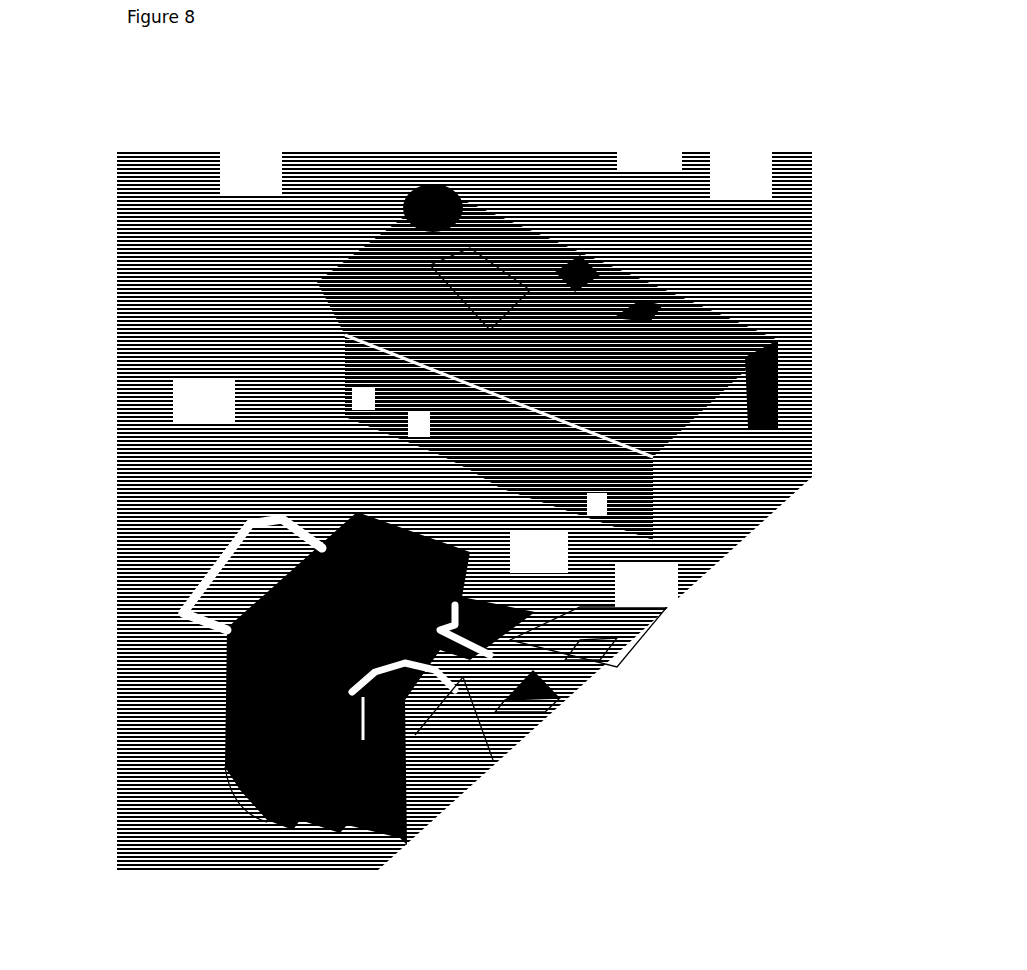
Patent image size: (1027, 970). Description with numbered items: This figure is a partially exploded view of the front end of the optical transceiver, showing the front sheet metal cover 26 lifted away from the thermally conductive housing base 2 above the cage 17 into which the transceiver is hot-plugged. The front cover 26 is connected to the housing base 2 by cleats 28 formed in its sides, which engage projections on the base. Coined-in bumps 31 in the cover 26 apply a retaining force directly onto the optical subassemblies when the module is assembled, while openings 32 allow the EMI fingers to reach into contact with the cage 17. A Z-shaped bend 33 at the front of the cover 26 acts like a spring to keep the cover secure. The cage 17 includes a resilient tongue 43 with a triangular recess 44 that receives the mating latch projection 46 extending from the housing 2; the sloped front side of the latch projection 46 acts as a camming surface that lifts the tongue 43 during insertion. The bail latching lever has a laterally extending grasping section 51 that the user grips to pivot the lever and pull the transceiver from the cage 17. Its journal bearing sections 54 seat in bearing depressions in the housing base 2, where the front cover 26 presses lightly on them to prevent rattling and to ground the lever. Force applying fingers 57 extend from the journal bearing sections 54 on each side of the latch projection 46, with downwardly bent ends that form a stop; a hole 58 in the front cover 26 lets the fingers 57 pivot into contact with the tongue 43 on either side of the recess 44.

The housing base 2 is at (225, 757).
The cage 17 is at (613, 645).
The front sheet metal cover 26 is at (712, 347).
The cleats 28 is at (355, 420).
The coined-in bumps 31 is at (653, 310).
The openings 32 is at (580, 265).
The Z-shaped bend 33 is at (385, 226).
The resilient tongue 43 is at (567, 682).
The triangular recess 44 is at (540, 697).
The latch projection 46 is at (463, 693).
The grasping section 51 is at (183, 607).
The journal bearing sections 54 is at (480, 593).
The force applying fingers 57 is at (527, 620).
The hole 58 is at (465, 265).